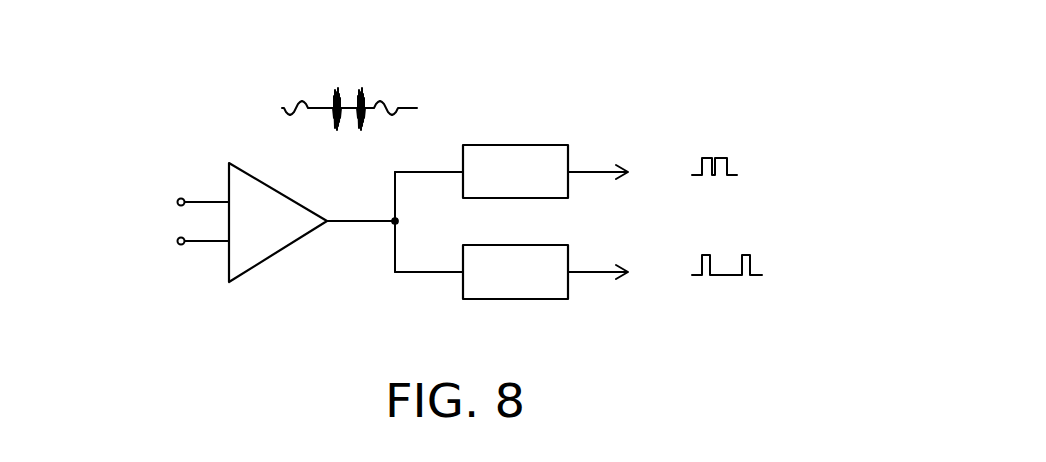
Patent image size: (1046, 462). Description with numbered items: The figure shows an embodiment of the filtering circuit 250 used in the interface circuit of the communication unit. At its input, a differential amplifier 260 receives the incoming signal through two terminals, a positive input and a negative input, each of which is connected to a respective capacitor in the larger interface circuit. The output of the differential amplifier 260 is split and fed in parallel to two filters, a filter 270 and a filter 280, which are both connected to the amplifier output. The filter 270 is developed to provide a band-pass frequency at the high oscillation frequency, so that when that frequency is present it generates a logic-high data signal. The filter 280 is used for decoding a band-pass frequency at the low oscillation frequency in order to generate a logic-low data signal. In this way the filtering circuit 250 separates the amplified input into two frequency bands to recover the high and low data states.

The filtering circuit 250 is at (665, 78).
The differential amplifier 260 is at (283, 192).
The filter 270 is at (514, 145).
The filter 280 is at (514, 245).